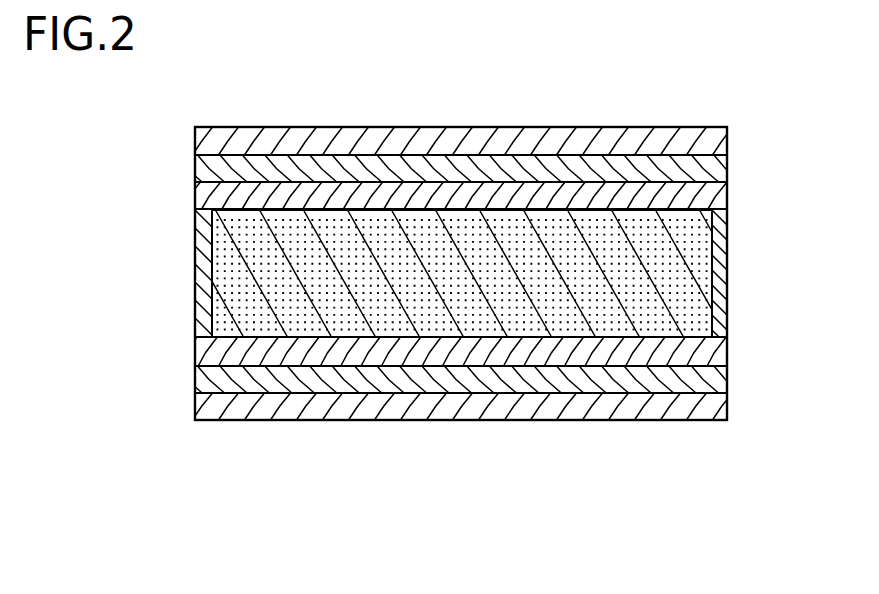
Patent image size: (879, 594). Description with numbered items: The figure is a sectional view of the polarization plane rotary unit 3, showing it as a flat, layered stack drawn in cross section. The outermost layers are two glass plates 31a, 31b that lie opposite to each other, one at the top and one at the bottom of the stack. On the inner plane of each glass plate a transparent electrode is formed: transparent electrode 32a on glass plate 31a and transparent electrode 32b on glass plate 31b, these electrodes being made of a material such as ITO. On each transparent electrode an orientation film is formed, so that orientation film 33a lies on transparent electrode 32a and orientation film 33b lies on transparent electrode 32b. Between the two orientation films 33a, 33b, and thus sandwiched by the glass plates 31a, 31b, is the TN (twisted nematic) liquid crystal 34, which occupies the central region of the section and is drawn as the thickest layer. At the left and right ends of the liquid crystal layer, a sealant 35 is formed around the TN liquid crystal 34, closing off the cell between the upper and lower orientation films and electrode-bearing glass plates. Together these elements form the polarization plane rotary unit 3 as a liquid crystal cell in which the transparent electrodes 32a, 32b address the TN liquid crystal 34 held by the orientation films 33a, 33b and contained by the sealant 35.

The polarization plane rotary unit 3 is at (488, 550).
The glass plate 31a is at (714, 141).
The transparent electrode 32a is at (714, 168).
The orientation film 33a is at (714, 196).
The TN liquid crystal 34 is at (214, 257).
The sealant 35 is at (196, 313).
The orientation film 33b is at (714, 355).
The transparent electrode 32b is at (714, 383).
The glass plate 31b is at (714, 411).